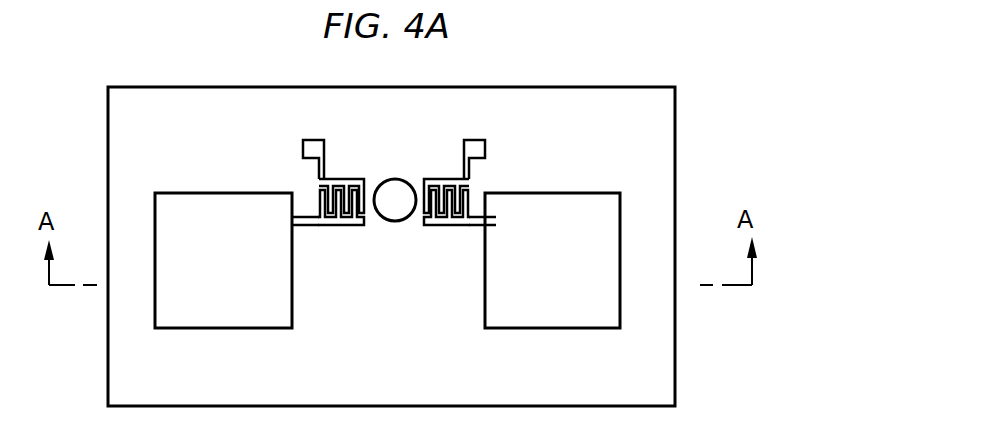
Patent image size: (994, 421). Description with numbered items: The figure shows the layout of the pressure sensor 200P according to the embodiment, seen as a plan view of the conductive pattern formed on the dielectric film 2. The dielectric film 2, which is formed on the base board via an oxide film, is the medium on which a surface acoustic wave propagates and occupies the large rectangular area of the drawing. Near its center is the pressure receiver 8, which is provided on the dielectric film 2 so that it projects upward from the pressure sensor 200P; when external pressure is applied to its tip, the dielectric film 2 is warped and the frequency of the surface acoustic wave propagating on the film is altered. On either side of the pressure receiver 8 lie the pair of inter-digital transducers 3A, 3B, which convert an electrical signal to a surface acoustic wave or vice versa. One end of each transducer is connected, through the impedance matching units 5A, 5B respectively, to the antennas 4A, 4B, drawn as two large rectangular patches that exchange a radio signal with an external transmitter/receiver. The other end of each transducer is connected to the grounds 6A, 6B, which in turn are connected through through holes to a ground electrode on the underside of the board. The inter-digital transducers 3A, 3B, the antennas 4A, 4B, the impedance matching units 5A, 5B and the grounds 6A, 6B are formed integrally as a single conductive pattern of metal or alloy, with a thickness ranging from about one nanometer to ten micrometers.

The dielectric film 2 is at (675, 196).
The pressure sensor 200P is at (703, 127).
The inter-digital transducer 3A is at (345, 179).
The inter-digital transducer 3B is at (430, 179).
The antenna 4A is at (181, 193).
The antenna 4B is at (548, 193).
The impedance matching unit 5A is at (306, 216).
The impedance matching unit 5B is at (473, 217).
The ground 6A is at (302, 142).
The ground 6B is at (481, 112).
The pressure receiver 8 is at (394, 222).